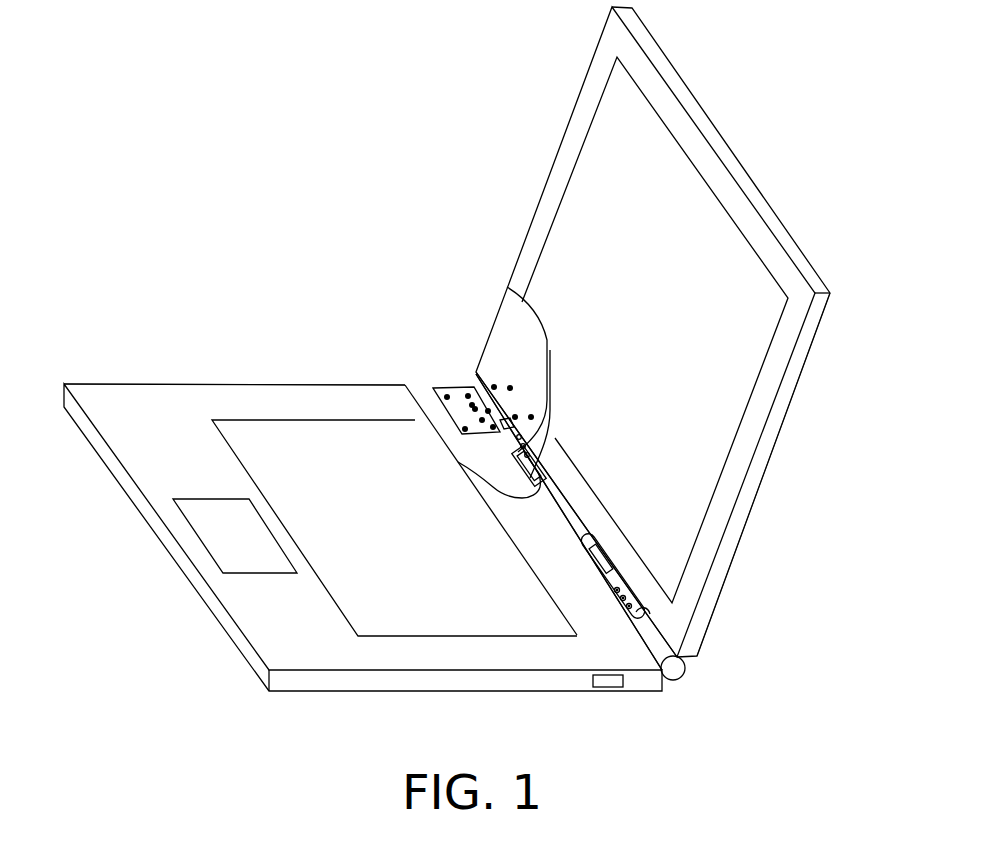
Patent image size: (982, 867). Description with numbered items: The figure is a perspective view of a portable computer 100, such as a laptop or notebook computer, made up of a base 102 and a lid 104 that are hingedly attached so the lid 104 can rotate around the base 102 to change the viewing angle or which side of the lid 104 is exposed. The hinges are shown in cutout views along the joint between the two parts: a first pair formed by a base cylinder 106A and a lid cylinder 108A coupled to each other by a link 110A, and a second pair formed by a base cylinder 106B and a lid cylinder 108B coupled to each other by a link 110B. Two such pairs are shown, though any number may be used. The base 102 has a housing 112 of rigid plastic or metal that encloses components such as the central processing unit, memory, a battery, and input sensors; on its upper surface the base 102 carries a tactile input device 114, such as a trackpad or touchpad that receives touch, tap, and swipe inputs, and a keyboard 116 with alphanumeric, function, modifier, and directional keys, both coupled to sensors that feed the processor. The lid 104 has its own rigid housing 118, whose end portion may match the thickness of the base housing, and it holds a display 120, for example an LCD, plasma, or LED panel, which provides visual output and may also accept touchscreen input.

The portable computer 100 is at (332, 153).
The base 102 is at (171, 370).
The lid 104 is at (540, 167).
The base cylinder 106A is at (548, 445).
The base cylinder 106B is at (600, 558).
The lid cylinder 108A is at (498, 485).
The lid cylinder 108B is at (603, 553).
The link 110A is at (550, 350).
The link 110B is at (623, 615).
The housing 112 is at (112, 426).
The tactile input device 114 is at (208, 520).
The keyboard 116 is at (328, 447).
The housing 118 is at (768, 480).
The display 120 is at (730, 263).